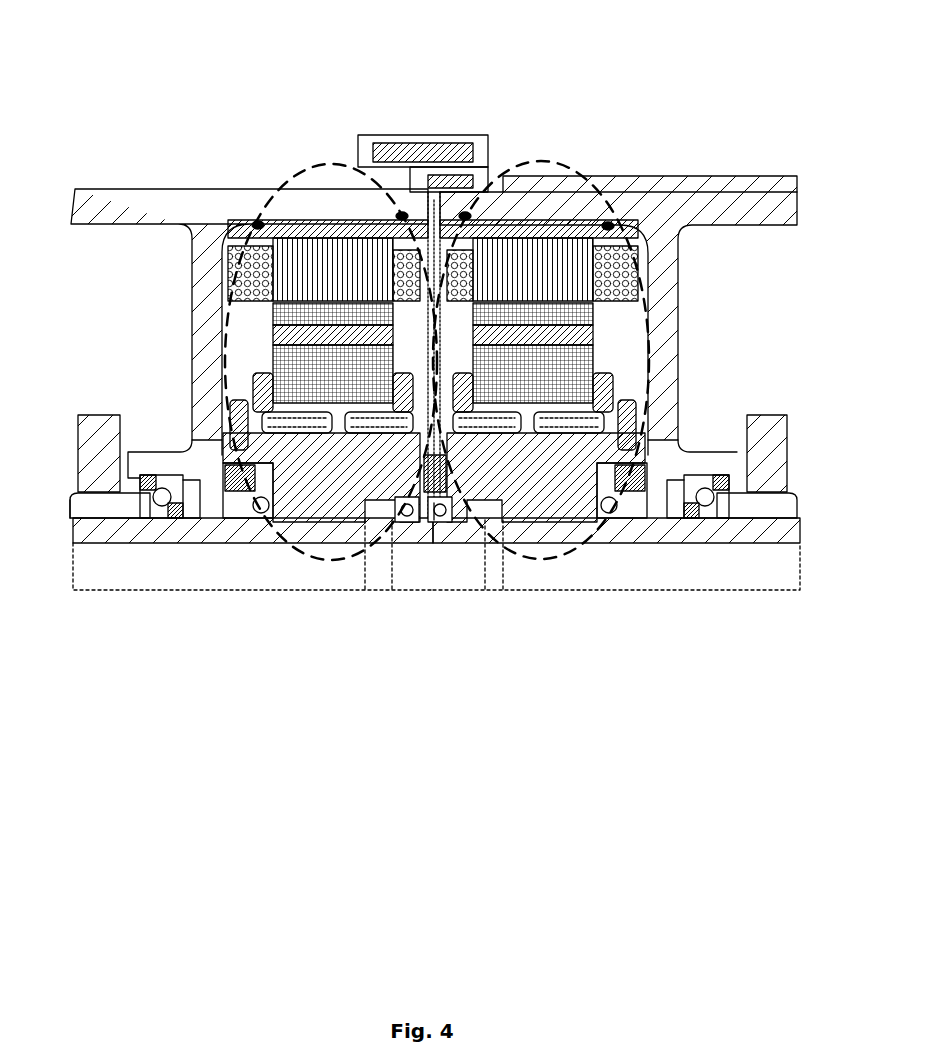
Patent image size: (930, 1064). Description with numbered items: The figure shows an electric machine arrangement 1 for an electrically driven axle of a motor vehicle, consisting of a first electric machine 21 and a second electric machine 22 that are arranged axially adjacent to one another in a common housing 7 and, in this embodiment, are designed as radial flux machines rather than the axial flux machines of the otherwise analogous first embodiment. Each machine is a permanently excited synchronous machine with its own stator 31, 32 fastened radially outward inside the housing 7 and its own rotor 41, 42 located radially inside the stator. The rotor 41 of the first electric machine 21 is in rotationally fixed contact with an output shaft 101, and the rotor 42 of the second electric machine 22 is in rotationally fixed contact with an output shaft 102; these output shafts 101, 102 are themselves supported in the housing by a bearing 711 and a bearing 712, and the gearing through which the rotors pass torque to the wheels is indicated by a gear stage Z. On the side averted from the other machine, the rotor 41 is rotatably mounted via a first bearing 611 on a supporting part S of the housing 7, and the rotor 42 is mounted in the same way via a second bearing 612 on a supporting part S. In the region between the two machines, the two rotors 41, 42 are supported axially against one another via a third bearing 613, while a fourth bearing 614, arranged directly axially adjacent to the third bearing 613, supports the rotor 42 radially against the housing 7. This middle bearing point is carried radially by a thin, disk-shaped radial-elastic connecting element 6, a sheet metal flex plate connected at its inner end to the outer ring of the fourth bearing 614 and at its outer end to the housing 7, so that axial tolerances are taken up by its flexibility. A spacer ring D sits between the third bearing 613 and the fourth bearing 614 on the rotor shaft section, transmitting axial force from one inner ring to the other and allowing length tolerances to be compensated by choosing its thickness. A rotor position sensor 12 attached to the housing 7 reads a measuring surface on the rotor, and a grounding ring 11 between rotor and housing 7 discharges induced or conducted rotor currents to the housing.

The electric machine arrangement 1 is at (476, 112).
The radial-elastic connecting element 6 is at (408, 194).
The housing 7 is at (165, 190).
The grounding ring 11 is at (236, 445).
The rotor position sensor 12 is at (641, 508).
The first electric machine 21 is at (288, 182).
The second electric machine 22 is at (578, 180).
The stator 31 is at (347, 285).
The stator 32 is at (520, 285).
The rotor 41 is at (287, 326).
The rotor 42 is at (571, 310).
The output shaft 101 is at (228, 548).
The output shaft 102 is at (636, 542).
The first bearing 611 is at (245, 466).
The second bearing 612 is at (617, 464).
The third bearing 613 is at (404, 524).
The fourth bearing 614 is at (442, 524).
The bearing 711 is at (153, 472).
The bearing 712 is at (717, 486).
The supporting part S is at (200, 375).
The gear stage Z is at (108, 445).
The spacer ring D is at (427, 503).